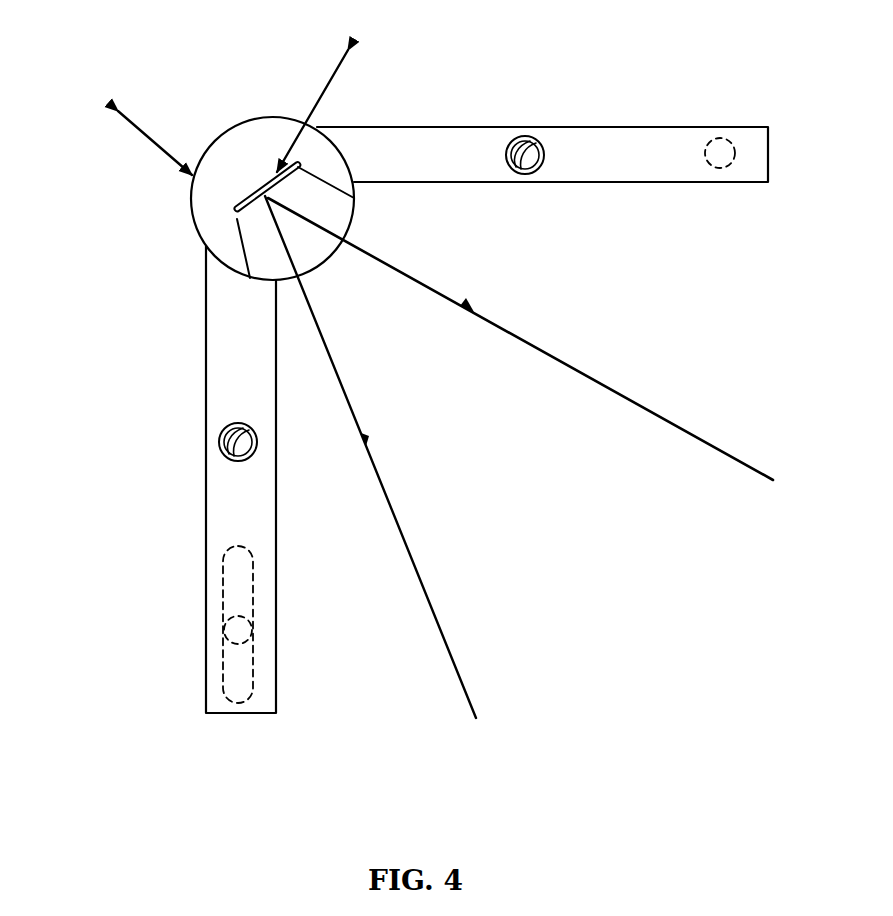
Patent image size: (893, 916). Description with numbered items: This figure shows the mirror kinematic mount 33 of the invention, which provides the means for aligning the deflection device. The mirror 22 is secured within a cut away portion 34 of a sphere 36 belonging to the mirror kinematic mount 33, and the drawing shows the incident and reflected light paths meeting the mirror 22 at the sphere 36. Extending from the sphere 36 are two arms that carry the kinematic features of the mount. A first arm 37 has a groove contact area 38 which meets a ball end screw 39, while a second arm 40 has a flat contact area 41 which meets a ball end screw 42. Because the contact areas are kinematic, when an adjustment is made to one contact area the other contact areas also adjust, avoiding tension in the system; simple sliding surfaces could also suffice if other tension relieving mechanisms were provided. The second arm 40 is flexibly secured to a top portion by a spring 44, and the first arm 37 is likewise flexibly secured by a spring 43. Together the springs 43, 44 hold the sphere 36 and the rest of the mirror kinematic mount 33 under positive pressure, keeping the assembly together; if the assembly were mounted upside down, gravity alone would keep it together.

The mirror 22 is at (328, 100).
The mirror kinematic mount 33 is at (205, 532).
The cut away portion 34 is at (340, 212).
The sphere 36 is at (226, 208).
The first arm 37 is at (233, 387).
The groove contact area 38 is at (294, 743).
The ball end screw 39 is at (161, 625).
The second arm 40 is at (542, 120).
The flat contact area 41 is at (704, 95).
The ball end screw 42 is at (744, 101).
The spring 43 is at (222, 440).
The spring 44 is at (525, 182).